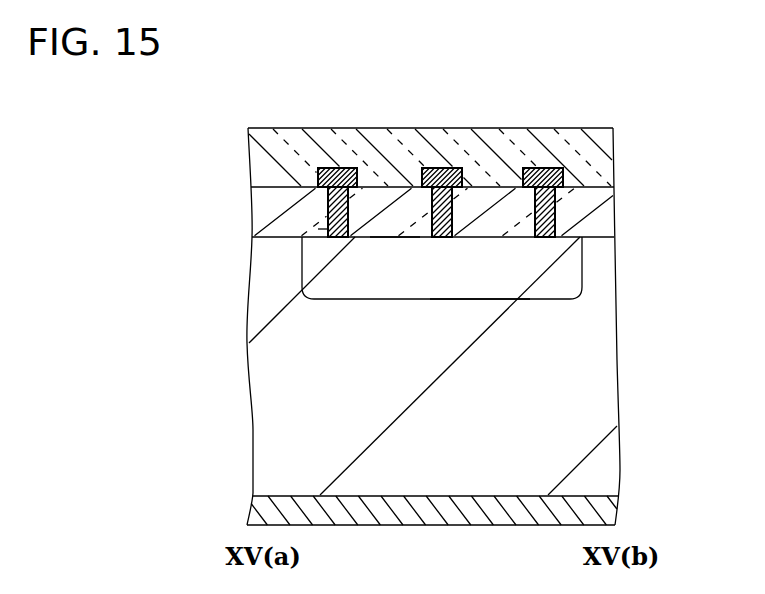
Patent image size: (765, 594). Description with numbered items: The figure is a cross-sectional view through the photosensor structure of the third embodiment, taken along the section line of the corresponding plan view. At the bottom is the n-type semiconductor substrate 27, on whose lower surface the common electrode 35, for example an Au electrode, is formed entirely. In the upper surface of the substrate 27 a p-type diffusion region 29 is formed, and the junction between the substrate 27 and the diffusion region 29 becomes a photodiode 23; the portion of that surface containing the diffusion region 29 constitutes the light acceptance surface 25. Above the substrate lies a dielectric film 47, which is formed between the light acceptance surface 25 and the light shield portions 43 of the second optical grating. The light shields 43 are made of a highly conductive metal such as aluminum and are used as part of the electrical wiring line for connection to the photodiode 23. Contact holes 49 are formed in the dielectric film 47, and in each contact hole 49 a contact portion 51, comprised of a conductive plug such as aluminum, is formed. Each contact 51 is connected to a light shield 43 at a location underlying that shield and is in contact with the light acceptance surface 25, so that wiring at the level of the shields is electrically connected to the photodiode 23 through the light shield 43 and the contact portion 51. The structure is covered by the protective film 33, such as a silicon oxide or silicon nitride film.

The photodiode 23 is at (392, 302).
The light acceptance surface 25 is at (386, 241).
The semiconductor substrate 27 is at (596, 414).
The p-type diffusion region 29 is at (460, 290).
The protective film 33 is at (612, 168).
The common electrode 35 is at (601, 518).
The light shield portion 43 is at (318, 168).
The dielectric film 47 is at (597, 218).
The contact hole 49 is at (323, 222).
The contact portion 51 is at (327, 202).